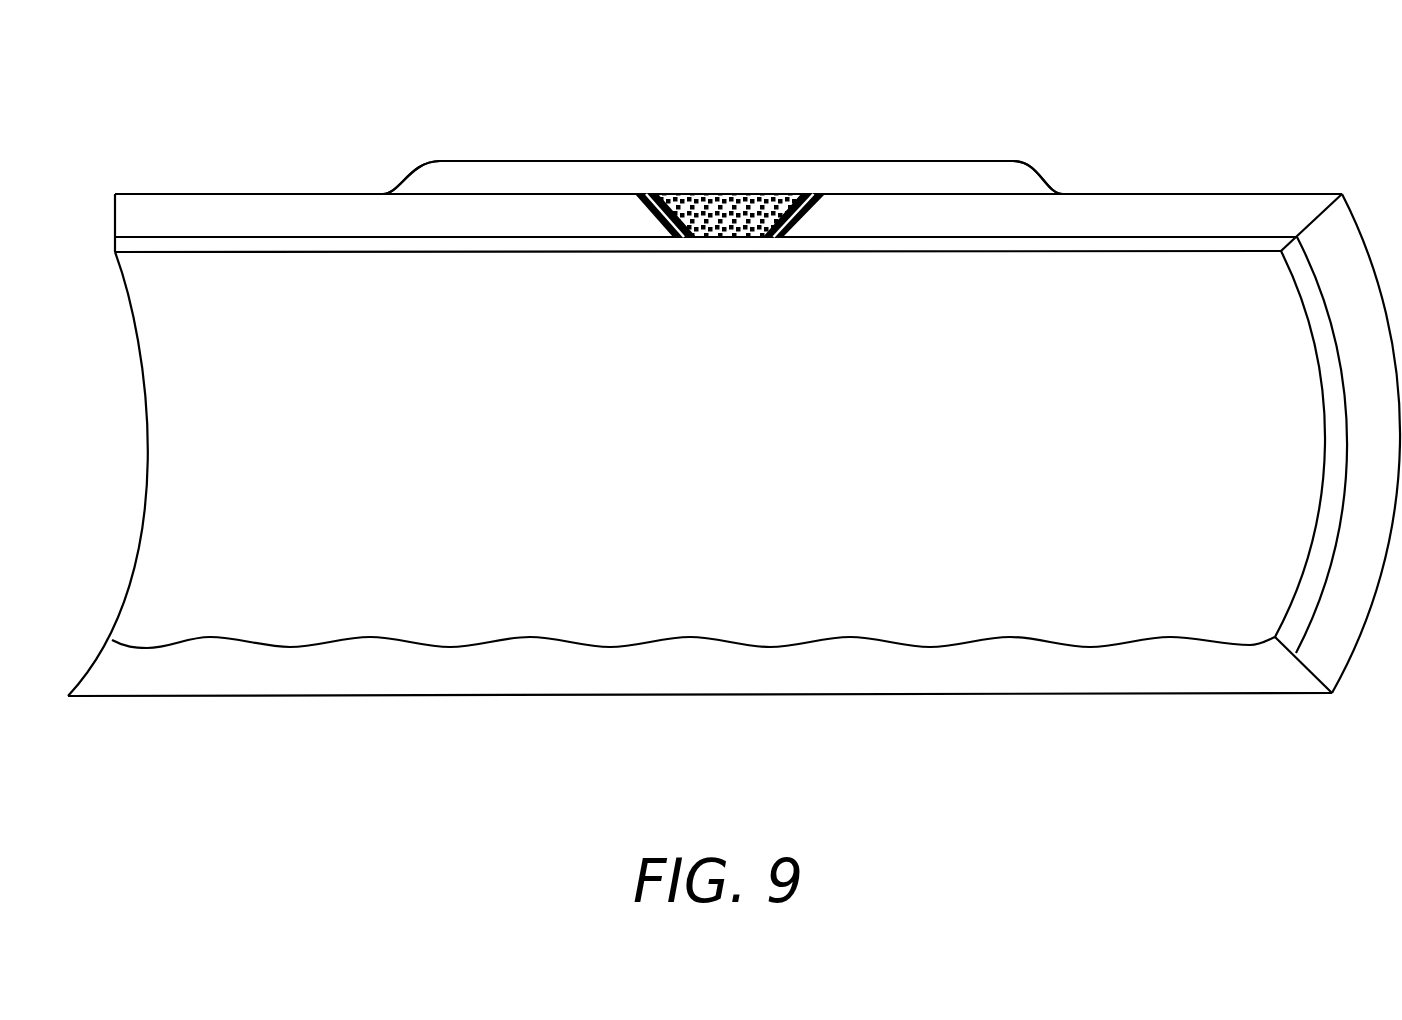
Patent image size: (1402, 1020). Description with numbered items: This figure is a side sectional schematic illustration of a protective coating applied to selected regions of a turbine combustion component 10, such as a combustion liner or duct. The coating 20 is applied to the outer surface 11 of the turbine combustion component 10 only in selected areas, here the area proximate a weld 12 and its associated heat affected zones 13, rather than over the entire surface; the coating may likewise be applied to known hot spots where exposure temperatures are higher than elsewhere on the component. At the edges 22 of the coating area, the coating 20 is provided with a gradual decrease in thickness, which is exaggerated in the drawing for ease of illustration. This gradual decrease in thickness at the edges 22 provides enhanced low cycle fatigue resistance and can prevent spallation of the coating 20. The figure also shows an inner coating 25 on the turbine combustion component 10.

The turbine combustion component 10 is at (182, 199).
The outer surface 11 is at (332, 193).
The weld 12 is at (733, 212).
The heat affected zone 13 is at (673, 218).
The coating 20 is at (593, 161).
The edges of the coating area 22 is at (405, 177).
The inner coating 25 is at (316, 250).